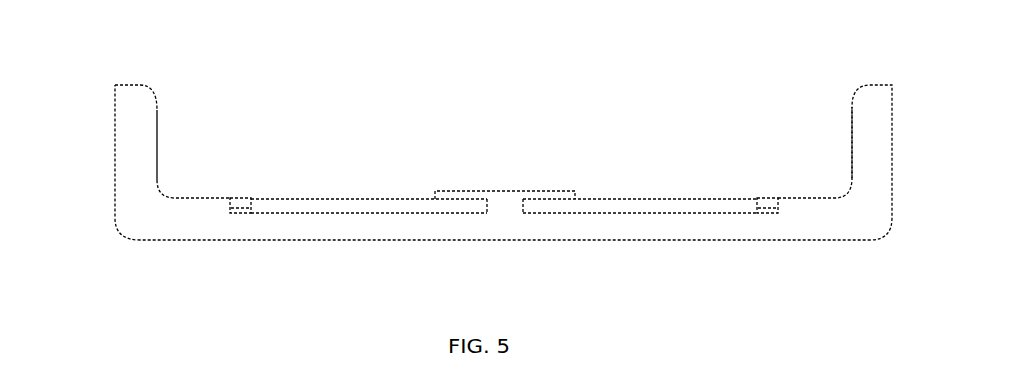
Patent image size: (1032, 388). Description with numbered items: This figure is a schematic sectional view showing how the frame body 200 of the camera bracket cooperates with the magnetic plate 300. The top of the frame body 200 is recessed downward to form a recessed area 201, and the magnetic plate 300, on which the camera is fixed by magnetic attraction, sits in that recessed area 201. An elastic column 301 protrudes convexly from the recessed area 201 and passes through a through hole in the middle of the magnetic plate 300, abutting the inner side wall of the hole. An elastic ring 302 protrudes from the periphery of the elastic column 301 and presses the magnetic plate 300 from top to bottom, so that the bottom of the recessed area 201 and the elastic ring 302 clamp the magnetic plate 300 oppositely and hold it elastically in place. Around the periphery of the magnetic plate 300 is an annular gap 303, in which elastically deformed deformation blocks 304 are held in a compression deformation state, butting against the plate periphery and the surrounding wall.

The frame body 200 is at (140, 217).
The recessed area 201 is at (717, 165).
The magnetic plate 300 is at (625, 205).
The elastic column 301 is at (502, 207).
The elastic ring 302 is at (462, 197).
The annular gap 303 is at (241, 197).
The deformation block 304 is at (238, 213).